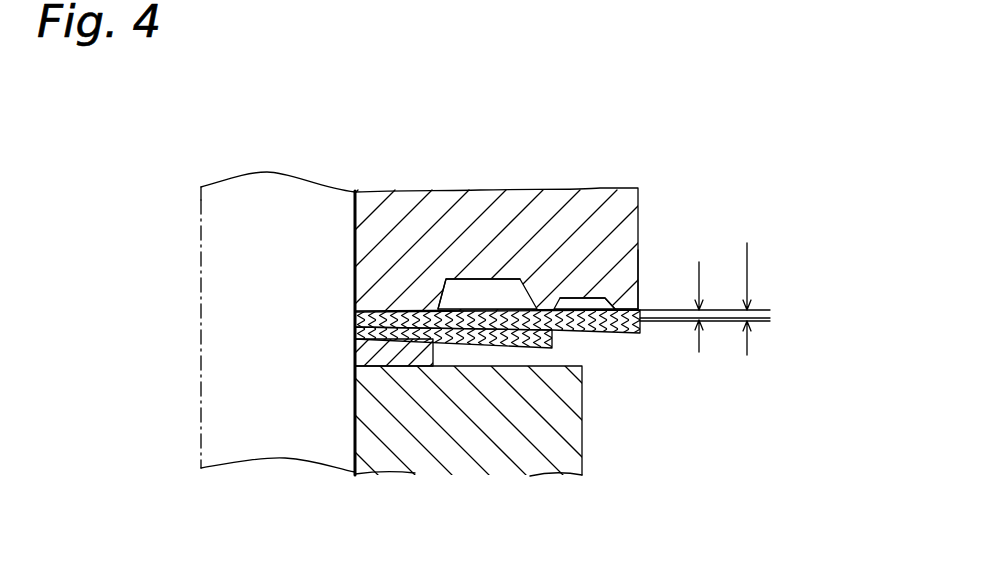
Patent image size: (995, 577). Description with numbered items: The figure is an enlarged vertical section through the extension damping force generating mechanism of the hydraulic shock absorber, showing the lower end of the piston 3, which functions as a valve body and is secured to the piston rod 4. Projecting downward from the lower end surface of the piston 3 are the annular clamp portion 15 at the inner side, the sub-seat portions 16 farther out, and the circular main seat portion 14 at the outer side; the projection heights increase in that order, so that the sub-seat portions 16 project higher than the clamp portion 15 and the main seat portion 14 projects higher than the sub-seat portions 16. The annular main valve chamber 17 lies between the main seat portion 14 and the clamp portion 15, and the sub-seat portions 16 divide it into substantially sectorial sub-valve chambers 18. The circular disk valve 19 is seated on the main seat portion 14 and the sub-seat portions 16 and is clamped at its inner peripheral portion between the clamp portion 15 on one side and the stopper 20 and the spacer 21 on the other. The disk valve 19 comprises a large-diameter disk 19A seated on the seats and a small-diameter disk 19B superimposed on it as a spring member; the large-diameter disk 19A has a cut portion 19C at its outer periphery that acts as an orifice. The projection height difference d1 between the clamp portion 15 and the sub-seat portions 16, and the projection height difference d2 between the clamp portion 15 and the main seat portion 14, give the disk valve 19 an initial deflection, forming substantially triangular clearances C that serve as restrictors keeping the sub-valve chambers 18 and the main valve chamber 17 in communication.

The piston 3 is at (385, 232).
The piston rod 4 is at (265, 413).
The main seat portion 14 is at (628, 300).
The clamp portion 15 is at (448, 297).
The sub-seat portion 16 is at (575, 297).
The main valve chamber 17 is at (500, 292).
The sub-valve chamber 18 is at (590, 297).
The disk valve 19 is at (575, 392).
The large-diameter disk 19A is at (628, 335).
The small-diameter disk 19B is at (560, 348).
The cut portion 19C is at (643, 328).
The stopper 20 is at (565, 460).
The spacer 21 is at (430, 348).
The substantially triangular clearance C is at (638, 293).
The projection height difference d1 is at (714, 304).
The projection height difference d2 is at (761, 297).